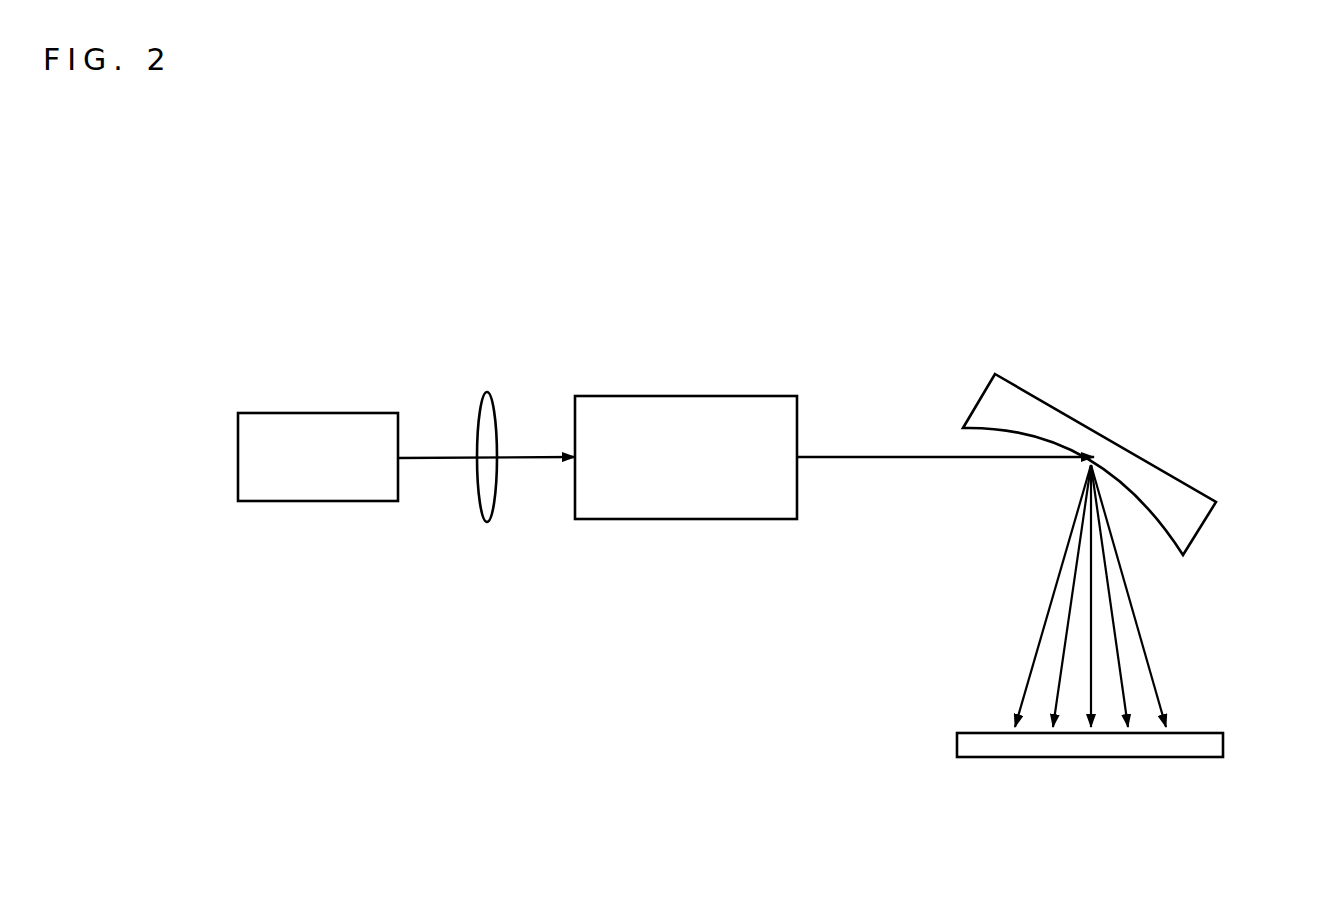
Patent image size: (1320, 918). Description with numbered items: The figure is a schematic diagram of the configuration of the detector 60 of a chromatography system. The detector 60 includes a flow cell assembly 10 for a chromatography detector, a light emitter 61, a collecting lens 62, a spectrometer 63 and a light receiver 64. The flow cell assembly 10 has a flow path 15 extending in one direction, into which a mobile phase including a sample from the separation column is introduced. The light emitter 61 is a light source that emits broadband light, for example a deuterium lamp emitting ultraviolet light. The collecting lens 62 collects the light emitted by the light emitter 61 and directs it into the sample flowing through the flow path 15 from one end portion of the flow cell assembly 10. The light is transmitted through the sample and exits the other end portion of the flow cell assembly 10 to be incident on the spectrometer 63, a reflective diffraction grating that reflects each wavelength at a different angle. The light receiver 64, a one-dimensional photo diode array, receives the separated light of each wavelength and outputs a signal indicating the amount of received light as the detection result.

The flow cell assembly 10 is at (824, 368).
The flow path 15 is at (670, 475).
The detector 60 is at (1252, 310).
The light emitter 61 is at (318, 413).
The collecting lens 62 is at (476, 449).
The spectrometer 63 is at (1112, 438).
The light receiver 64 is at (1090, 757).